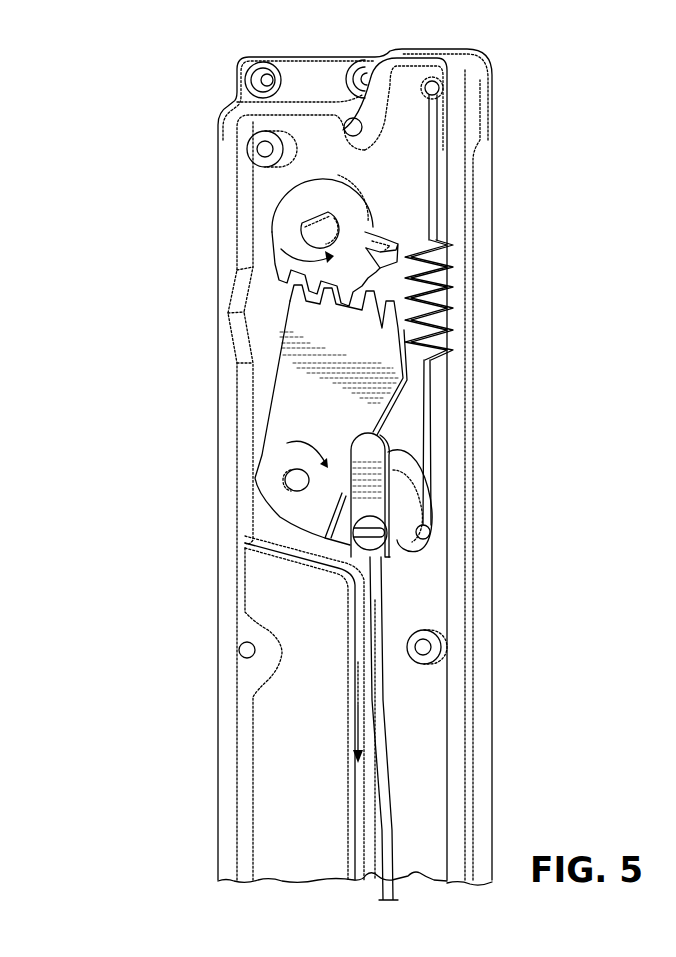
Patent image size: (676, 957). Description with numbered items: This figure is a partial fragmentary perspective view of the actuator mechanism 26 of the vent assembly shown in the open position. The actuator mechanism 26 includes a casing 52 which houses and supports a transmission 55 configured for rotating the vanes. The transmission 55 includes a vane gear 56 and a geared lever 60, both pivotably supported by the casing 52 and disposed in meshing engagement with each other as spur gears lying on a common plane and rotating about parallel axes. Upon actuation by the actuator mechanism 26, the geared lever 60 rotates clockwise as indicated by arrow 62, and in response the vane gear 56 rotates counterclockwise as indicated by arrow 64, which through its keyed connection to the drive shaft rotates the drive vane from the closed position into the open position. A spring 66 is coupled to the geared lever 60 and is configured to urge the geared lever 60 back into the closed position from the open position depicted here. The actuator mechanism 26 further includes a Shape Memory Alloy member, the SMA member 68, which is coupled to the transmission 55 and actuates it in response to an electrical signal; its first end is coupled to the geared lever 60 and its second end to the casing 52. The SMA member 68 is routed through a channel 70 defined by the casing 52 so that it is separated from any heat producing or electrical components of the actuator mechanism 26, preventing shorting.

The actuator mechanism 26 is at (522, 76).
The casing 52 is at (477, 86).
The transmission 55 is at (377, 244).
The vane gear 56 is at (278, 233).
The geared lever 60 is at (280, 422).
The arrow 62 is at (352, 442).
The arrow 64 is at (281, 256).
The spring 66 is at (430, 203).
The SMA member 68 is at (373, 647).
The channel 70 is at (430, 786).